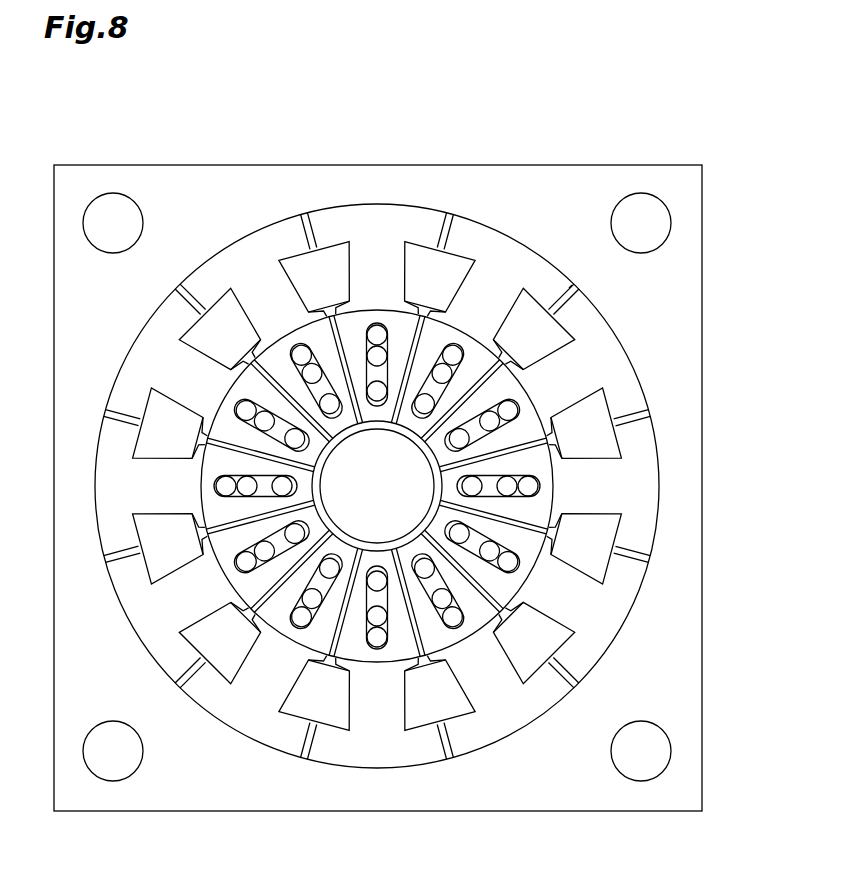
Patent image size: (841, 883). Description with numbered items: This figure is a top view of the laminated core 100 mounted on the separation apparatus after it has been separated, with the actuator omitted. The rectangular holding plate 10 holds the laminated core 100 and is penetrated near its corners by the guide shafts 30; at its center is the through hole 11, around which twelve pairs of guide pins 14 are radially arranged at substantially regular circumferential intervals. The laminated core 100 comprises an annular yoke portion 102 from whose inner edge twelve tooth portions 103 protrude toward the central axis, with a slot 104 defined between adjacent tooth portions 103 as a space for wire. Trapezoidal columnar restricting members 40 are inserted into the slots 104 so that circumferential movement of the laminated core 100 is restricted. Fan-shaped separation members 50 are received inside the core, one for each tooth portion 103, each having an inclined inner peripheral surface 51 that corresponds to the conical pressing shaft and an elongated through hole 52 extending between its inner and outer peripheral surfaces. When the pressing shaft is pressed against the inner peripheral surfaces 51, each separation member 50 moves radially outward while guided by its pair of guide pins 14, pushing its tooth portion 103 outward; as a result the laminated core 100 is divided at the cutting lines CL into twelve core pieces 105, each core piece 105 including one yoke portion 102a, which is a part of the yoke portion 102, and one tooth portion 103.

The holding plate 10 is at (620, 146).
The guide shaft 30 is at (118, 194).
The laminated core 100 is at (382, 442).
The yoke portion 102a is at (377, 472).
The yoke portion 102 is at (275, 245).
The tooth portion 103 is at (262, 290).
The slot 104 is at (144, 412).
The core piece 105 is at (517, 266).
The cutting line CL is at (569, 288).
The restricting member 40 is at (568, 326).
The guide pin 14 is at (402, 370).
The separation member 50 is at (305, 640).
The inner peripheral surface 51 is at (351, 437).
The through hole 52 is at (218, 492).
The through hole 11 is at (332, 497).